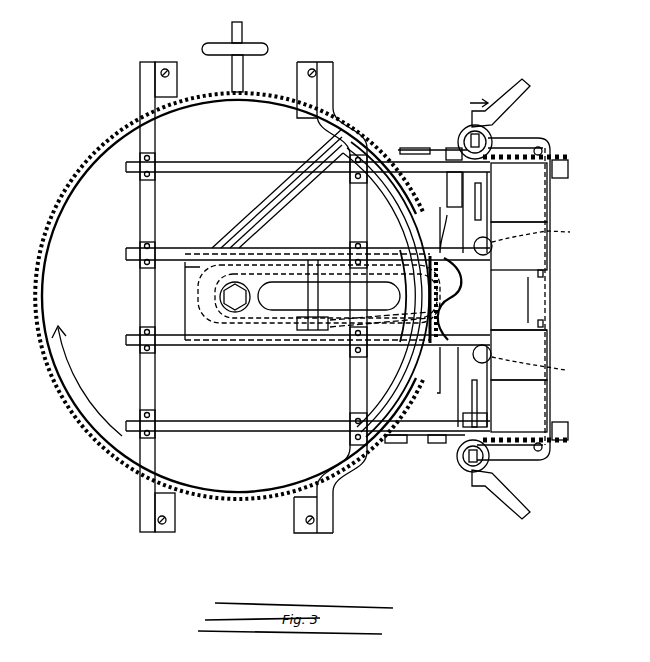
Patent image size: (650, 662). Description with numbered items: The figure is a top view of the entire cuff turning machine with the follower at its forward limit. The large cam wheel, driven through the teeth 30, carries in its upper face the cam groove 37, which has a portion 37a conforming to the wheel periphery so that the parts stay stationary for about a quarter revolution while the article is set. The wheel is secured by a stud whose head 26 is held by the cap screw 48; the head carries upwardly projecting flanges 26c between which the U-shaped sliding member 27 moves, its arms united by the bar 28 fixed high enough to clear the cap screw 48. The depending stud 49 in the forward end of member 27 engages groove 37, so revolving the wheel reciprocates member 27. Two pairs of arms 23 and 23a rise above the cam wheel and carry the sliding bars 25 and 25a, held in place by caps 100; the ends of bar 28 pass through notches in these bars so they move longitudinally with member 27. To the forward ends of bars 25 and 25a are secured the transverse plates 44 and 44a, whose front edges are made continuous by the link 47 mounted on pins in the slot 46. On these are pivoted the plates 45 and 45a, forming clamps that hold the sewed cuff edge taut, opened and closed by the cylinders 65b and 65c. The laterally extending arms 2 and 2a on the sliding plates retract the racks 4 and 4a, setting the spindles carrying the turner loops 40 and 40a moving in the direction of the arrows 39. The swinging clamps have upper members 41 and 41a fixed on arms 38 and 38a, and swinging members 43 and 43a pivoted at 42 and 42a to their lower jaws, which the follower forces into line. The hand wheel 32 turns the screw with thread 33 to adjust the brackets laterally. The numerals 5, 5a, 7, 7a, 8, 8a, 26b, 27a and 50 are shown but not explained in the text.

The laterally extending arm 2 is at (450, 265).
The laterally extending arm 2a is at (444, 337).
The rack 4 is at (568, 175).
The rack 4a is at (568, 428).
The pivot 5 is at (492, 136).
The pivot 5a is at (465, 466).
The strip 7 is at (413, 152).
The strip 7a is at (414, 410).
The rod 8 is at (400, 172).
The rod 8a is at (467, 392).
The arm 23 is at (148, 128).
The arm 23a is at (146, 460).
The sliding bar 25 is at (172, 252).
The sliding bar 25a is at (200, 368).
The stud head 26 is at (193, 278).
The cam plate bar 26b is at (266, 292).
The upwardly projecting flange 26c is at (185, 340).
The U-shaped sliding member 27 is at (340, 322).
The slide block 27a is at (290, 359).
The bar 28 is at (329, 296).
The teeth 30 is at (90, 158).
The hand wheel 32 is at (242, 30).
The screw thread 33 is at (238, 74).
The cam groove 37 is at (318, 147).
The groove portion 37a is at (400, 205).
The arm 38 is at (475, 140).
The arm 38a is at (473, 472).
The arrow 39 is at (480, 90).
The turner loop 40 is at (528, 92).
The turner loop 40a is at (510, 500).
The upper clamp member 41 is at (517, 147).
The upper clamp member 41a is at (520, 460).
The pivot 42 is at (543, 148).
The pivot 42a is at (547, 454).
The swinging member 43 is at (543, 160).
The swinging member 43a is at (543, 442).
The plate 44 is at (540, 203).
The plate 44a is at (547, 394).
The plate 45 is at (537, 243).
The plate 45a is at (533, 352).
The slot 46 is at (543, 274).
The link 47 is at (540, 299).
The cap screw 48 is at (232, 298).
The stud 49 is at (380, 310).
The rotation arrow 50 is at (63, 372).
The cylinder 65b is at (545, 234).
The cylinder 65c is at (542, 370).
The cap 100 is at (150, 255).